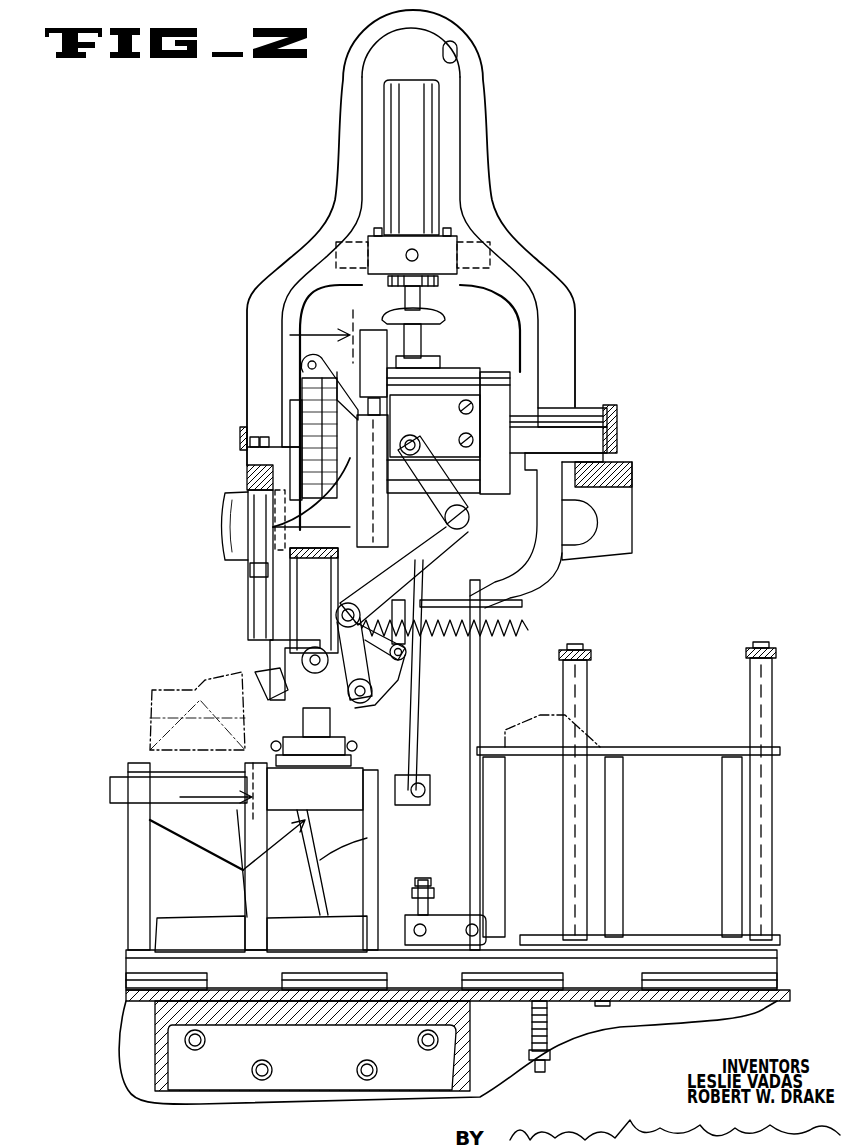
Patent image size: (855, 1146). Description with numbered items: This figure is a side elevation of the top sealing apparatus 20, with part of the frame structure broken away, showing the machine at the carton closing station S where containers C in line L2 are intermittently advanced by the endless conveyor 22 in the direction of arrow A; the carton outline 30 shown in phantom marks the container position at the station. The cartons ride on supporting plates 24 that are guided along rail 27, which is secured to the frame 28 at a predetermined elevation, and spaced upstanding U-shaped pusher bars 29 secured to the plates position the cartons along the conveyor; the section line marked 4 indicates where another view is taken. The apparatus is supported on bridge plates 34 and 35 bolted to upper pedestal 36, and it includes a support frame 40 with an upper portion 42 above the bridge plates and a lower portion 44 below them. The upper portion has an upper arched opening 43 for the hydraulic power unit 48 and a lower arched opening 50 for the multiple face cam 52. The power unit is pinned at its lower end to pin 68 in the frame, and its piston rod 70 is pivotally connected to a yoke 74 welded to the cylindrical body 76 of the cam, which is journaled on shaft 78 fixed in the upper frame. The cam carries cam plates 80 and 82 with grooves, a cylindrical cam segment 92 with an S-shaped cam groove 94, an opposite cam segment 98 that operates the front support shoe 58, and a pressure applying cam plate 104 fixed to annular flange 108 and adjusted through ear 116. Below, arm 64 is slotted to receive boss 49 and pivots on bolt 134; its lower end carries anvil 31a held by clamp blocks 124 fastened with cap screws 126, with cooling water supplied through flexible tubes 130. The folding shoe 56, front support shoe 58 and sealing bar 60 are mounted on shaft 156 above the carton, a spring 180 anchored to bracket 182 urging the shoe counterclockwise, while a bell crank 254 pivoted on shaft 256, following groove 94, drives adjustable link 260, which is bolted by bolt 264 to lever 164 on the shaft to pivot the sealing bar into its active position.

The top sealing apparatus 20 is at (626, 152).
The endless conveyor 22 is at (118, 934).
The supporting plates 24 is at (280, 962).
The rail 27 is at (140, 968).
The frame 28 is at (122, 1082).
The U-shaped pusher bars 29 is at (252, 895).
The container 30 is at (135, 696).
The anvil 31a is at (325, 725).
The bridge plate 34 is at (247, 473).
The bridge plate 35 is at (625, 470).
The upper pedestal 36 is at (620, 517).
The support frame 40 is at (548, 300).
The upper portion 42 is at (578, 322).
The upper arched opening 43 is at (455, 52).
The lower portion 44 is at (535, 568).
The hydraulic power unit 48 is at (440, 103).
The boss 49 is at (328, 565).
The lower arched opening 50 is at (512, 295).
The multiple face cam 52 is at (513, 387).
The folding shoe 56 is at (248, 681).
The front support shoe 58 is at (402, 688).
The sealing bar 60 is at (235, 648).
The arm 64 is at (307, 515).
The pin 68 is at (340, 245).
The piston rod 70 is at (437, 333).
The yoke 74 is at (430, 360).
The cylindrical body 76 is at (520, 408).
The shaft 78 is at (617, 430).
The cam plate 80 is at (370, 378).
The cam plate 82 is at (367, 483).
The cylindrical cam segment 92 is at (430, 426).
The S-shaped cam groove 94 is at (433, 473).
The cylindrical cam segment 98 is at (505, 368).
The pressure applying cam plate 104 is at (305, 405).
The annular flange 108 is at (293, 420).
The ear 116 is at (302, 364).
The clamp blocks 124 is at (375, 762).
The cap screws 126 is at (340, 784).
The flexible tubes 130 is at (350, 745).
The bolt 134 is at (260, 572).
The shaft 156 is at (312, 660).
The lever 164 is at (360, 660).
The spring 180 is at (515, 622).
The bracket 182 is at (522, 604).
The bell crank 254 is at (420, 577).
The shaft 256 is at (469, 518).
The adjustable link 260 is at (406, 654).
The bolt 264 is at (372, 696).
The direction arrow A is at (40, 840).
The containers C is at (150, 718).
The carton closing station S is at (243, 870).
The line of containers L2 is at (675, 636).
The section line 4- 4 is at (266, 570).